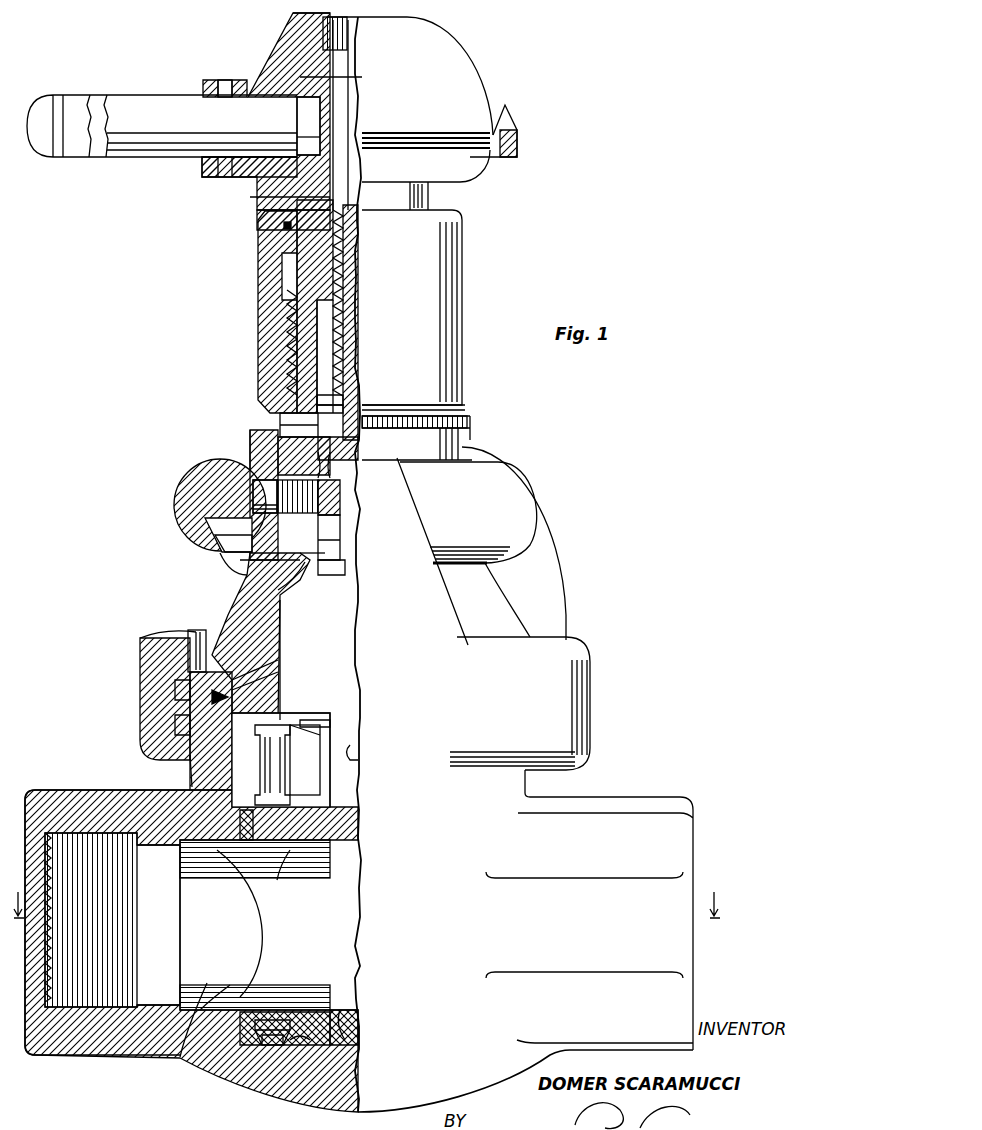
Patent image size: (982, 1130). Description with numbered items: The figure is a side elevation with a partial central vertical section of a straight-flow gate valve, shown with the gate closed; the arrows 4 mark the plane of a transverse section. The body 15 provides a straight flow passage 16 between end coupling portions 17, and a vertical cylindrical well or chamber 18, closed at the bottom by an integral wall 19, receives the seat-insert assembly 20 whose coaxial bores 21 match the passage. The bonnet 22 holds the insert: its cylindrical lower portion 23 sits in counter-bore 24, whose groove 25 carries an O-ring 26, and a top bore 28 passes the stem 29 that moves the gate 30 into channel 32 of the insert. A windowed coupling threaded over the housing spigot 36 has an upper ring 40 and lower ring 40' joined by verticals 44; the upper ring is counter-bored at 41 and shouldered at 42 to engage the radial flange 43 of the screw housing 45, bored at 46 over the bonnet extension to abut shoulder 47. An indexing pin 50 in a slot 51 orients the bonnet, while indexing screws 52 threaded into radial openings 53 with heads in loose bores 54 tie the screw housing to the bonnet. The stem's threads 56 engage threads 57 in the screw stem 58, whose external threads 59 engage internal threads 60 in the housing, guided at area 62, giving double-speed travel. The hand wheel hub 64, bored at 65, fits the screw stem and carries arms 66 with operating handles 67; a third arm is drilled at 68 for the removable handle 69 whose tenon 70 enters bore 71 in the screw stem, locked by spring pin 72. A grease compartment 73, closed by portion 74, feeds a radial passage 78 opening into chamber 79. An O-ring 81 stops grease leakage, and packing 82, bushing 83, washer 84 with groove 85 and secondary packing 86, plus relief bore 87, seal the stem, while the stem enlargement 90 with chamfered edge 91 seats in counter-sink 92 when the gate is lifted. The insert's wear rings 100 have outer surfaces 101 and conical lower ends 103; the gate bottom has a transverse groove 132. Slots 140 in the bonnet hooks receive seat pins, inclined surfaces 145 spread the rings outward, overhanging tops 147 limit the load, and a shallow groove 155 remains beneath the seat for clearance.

The section line 4 is at (365, 893).
The body 15 is at (525, 1064).
The straight flow passage 16 is at (131, 920).
The end coupling portions 17 is at (82, 800).
The cylindrical well or chamber 18 is at (212, 848).
The integral wall 19 is at (345, 1060).
The seat-insert assembly 20 is at (260, 923).
The aligned co-axial bores 21 is at (172, 1062).
The bonnet 22 is at (262, 618).
The cylindrical lower portion 23 is at (262, 672).
The counter-bore 24 is at (260, 662).
The circumferential channel or groove 25 is at (175, 692).
The O-ring 26 is at (225, 697).
The co-axial bore 28 is at (345, 572).
The stem 29 is at (360, 640).
The gate 30 is at (360, 925).
The channel 32 is at (335, 962).
The housing spigot 36 is at (192, 770).
The upper ring 40 is at (490, 512).
The lower ring 40' is at (361, 703).
The counter-bore 41 is at (215, 520).
The transverse shoulder 42 is at (250, 470).
The radial flange 43 is at (230, 545).
The circumferentially spaced verticals 44 is at (548, 584).
The screw housing 45 is at (450, 300).
The coaxial bore 46 is at (240, 560).
The shoulder 47 is at (222, 570).
The indexing pin 50 is at (168, 636).
The longitudinal slot 51 is at (196, 630).
The indexing screws 52 is at (335, 490).
The radial openings 53 is at (335, 525).
The radial bores 54 is at (252, 452).
The threads 56 is at (336, 340).
The threads 57 is at (348, 272).
The screw stem 58 is at (280, 210).
The external threads 59 is at (290, 378).
The internal threads 60 is at (287, 326).
The guiding area 62 is at (262, 228).
The hand wheel hub 64 is at (288, 52).
The concentric bore 65 is at (270, 68).
The radial integral arms 66 is at (204, 88).
The operating handles 67 is at (508, 104).
The radial bore 68 is at (225, 175).
The removable handle 69 is at (148, 155).
The tenon 70 is at (310, 126).
The bore 71 is at (290, 196).
The spring pin 72 is at (222, 82).
The compartment 73 is at (368, 180).
The closing portion 74 is at (323, 20).
The radial passage 78 is at (345, 398).
The enlarged co-axial chamber 79 is at (345, 408).
The O-ring 81 is at (283, 230).
The circumferential packing 82 is at (340, 545).
The metal bushing 83 is at (340, 502).
The washer 84 is at (280, 428).
The internal circumferential groove 85 is at (340, 445).
The secondary stem packing 86 is at (350, 440).
The bore 87 is at (335, 462).
The enlargement 90 is at (358, 747).
The chamfered upper edge 91 is at (345, 735).
The counter sink 92 is at (345, 566).
The tubular wear-rings 100 is at (290, 848).
The outer cylindrical surfaces 101 is at (333, 830).
The truncated conical lower ends 103 is at (268, 1050).
The transverse groove 132 is at (350, 1012).
The outwardly facing slots 140 is at (310, 768).
The inclined surfaces 145 is at (332, 720).
The overhanging flat tops 147 is at (310, 720).
The shallow circumferential groove 155 is at (300, 1048).